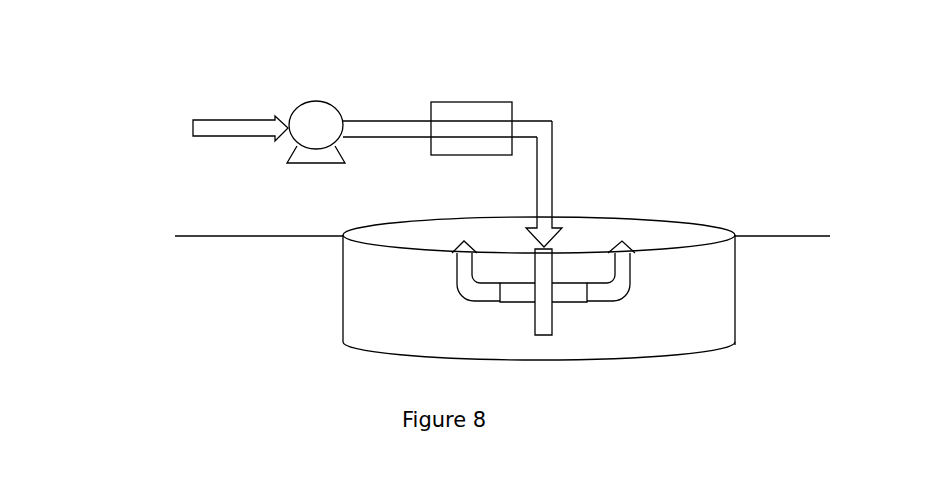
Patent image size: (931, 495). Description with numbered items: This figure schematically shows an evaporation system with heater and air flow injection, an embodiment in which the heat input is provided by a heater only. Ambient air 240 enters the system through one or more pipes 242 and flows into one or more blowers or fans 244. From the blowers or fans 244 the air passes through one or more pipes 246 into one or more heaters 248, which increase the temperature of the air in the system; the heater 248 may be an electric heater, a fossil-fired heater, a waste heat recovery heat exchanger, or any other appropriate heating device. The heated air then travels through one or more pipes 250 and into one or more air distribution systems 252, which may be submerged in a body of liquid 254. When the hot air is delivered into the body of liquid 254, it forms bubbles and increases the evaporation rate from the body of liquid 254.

The ambient air 240 is at (160, 138).
The pipes 242 is at (219, 118).
The blowers or fans 244 is at (310, 115).
The pipes 246 is at (370, 121).
The heaters 248 is at (463, 112).
The pipes 250 is at (552, 163).
The air distribution systems 252 is at (543, 295).
The body of liquid 254 is at (712, 298).